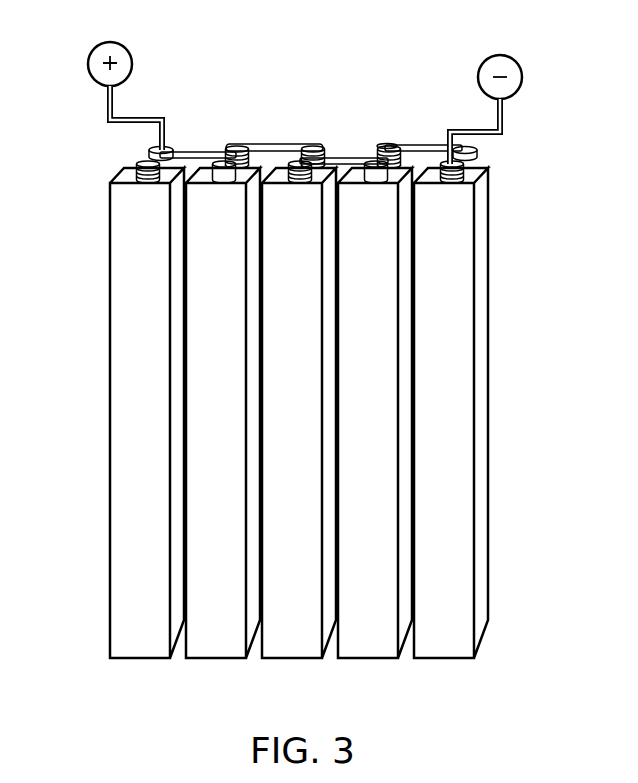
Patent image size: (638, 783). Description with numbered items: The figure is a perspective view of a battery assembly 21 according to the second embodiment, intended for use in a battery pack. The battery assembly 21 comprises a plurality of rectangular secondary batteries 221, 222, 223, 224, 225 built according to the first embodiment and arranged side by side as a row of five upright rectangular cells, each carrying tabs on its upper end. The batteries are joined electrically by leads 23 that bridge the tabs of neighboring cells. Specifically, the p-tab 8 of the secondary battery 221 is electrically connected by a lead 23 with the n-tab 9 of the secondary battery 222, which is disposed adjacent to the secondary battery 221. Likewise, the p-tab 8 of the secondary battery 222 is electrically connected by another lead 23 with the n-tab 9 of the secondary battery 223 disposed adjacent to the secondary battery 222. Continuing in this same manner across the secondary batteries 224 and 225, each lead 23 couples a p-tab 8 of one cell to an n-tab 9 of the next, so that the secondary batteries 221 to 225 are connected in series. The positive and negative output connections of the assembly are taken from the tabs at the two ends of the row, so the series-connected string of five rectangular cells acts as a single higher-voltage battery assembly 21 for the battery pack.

The battery assembly 21 is at (350, 86).
The secondary battery 221 is at (438, 644).
The secondary battery 222 is at (365, 644).
The secondary battery 223 is at (290, 644).
The secondary battery 224 is at (213, 644).
The secondary battery 225 is at (137, 644).
The lead 23 is at (277, 145).
The p-tab 8 is at (378, 147).
The n-tab 9 is at (388, 150).